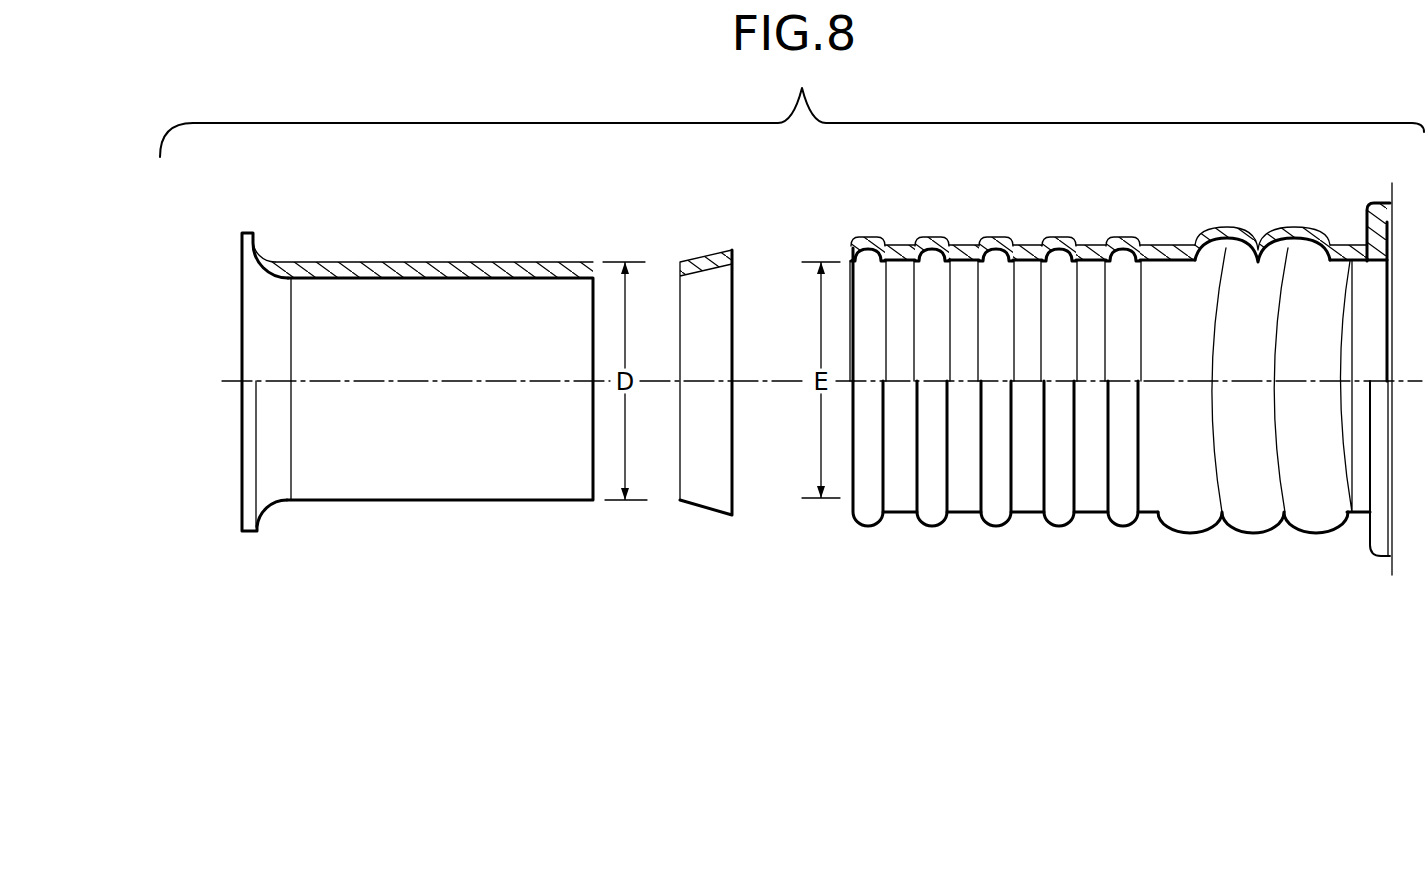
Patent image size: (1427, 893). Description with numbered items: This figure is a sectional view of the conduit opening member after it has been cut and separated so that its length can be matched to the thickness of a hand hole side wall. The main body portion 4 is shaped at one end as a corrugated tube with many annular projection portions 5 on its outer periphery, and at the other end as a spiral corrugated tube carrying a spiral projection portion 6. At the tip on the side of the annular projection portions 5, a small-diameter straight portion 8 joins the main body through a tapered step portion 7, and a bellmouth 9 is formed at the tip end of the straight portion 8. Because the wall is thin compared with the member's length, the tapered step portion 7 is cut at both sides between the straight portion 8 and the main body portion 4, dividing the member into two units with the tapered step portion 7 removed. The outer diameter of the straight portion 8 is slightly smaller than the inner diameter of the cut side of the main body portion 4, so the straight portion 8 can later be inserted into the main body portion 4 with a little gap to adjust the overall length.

The main body portion 4 is at (1121, 368).
The annular projection portions 5 is at (993, 240).
The spiral projection portion 6 is at (1234, 227).
The tapered step portion 7 is at (709, 250).
The straight portion 8 is at (452, 258).
The bellmouth 9 is at (262, 258).